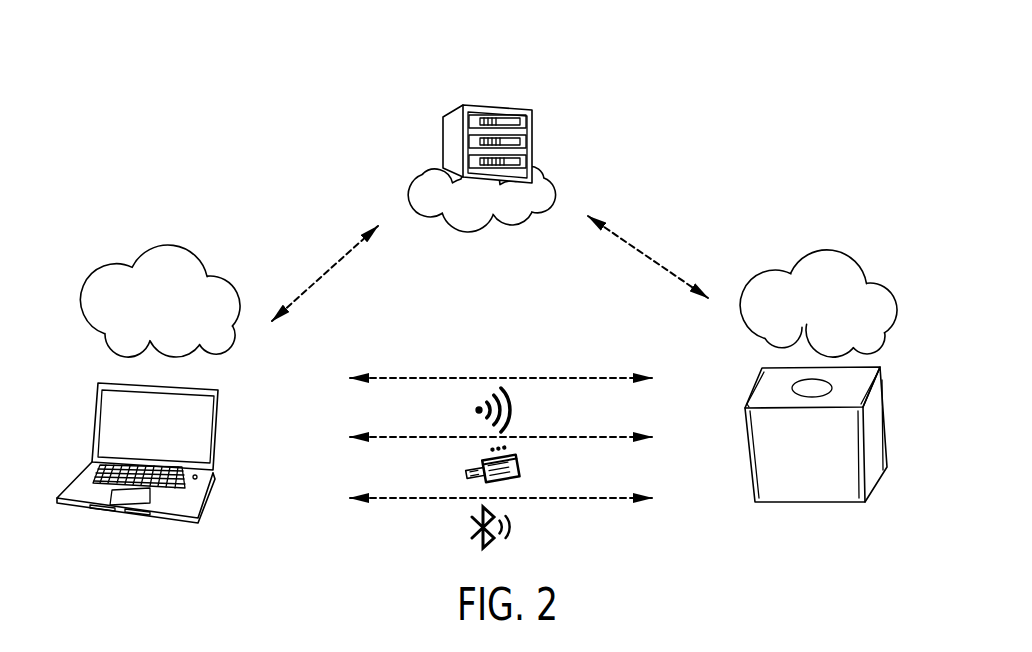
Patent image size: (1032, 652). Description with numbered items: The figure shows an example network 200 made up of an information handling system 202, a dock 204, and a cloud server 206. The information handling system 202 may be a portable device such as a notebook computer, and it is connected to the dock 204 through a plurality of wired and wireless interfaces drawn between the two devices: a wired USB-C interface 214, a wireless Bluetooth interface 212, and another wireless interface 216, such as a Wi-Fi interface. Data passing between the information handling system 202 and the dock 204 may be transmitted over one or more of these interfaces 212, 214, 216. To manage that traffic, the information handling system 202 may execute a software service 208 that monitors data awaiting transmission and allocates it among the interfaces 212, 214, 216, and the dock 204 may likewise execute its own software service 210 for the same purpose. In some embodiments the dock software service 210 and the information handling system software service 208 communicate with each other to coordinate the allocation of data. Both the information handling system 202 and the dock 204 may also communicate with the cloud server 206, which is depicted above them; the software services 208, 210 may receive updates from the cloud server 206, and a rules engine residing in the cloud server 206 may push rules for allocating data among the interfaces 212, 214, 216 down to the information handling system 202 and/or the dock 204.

The network 200 is at (712, 97).
The information handling system 202 is at (190, 505).
The dock 204 is at (785, 503).
The cloud server 206 is at (458, 105).
The information handling system software service 208 is at (138, 252).
The dock software service 210 is at (847, 252).
The wireless Bluetooth interface 212 is at (513, 523).
The wired USB-C interface 214 is at (518, 465).
The wireless interface 216 is at (503, 413).